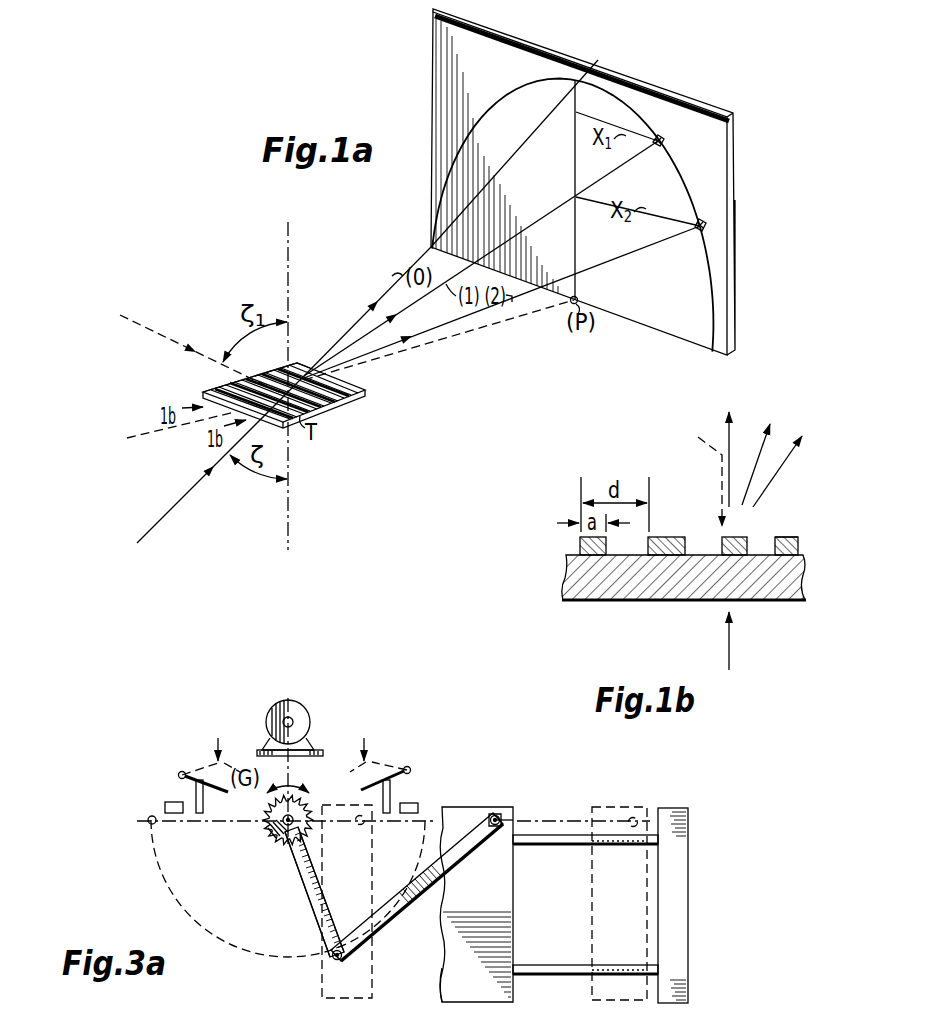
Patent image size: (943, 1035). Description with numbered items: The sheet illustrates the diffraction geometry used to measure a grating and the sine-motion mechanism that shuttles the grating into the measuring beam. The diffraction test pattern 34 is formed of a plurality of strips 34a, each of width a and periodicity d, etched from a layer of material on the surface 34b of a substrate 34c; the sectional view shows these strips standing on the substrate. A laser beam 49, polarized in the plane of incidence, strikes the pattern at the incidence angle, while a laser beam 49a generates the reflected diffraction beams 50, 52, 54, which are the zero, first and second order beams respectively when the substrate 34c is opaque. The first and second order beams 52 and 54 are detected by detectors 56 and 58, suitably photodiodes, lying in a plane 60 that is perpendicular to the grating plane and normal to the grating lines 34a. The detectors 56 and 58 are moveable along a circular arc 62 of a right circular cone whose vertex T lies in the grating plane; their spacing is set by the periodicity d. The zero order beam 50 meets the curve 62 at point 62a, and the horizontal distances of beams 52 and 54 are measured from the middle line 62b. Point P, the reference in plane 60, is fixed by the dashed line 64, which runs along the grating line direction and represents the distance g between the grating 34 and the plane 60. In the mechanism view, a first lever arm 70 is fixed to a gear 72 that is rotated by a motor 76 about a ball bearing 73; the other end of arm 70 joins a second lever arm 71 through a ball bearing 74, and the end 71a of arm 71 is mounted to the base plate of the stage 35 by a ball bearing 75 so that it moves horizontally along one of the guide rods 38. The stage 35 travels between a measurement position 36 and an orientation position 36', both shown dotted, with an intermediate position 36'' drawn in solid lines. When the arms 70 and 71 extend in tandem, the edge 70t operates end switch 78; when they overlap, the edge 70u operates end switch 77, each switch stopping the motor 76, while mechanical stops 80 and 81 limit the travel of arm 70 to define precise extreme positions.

In FIG. 1A, the diffraction test pattern 34 is at (330, 396).
In FIG. 1B, the diffraction test pattern 34 is at (562, 574).
In FIG. 1A, the strips 34a is at (232, 384).
In FIG. 1B, the strips 34a is at (580, 547).
In FIG. 1B, the surface 34b is at (768, 537).
In FIG. 1B, the substrate 34c is at (598, 604).
In FIG. 3A, the stage 35 is at (474, 953).
In FIG. 3A, the measurement position 36 is at (367, 918).
In FIG. 3A, the orientation position 36' is at (600, 907).
In FIG. 3A, the intermediate position 36'' is at (411, 985).
In FIG. 3A, the guide rods 38 is at (574, 834).
In FIG. 1A, the laser beam 49 is at (198, 474).
In FIG. 1B, the laser beam 49 is at (730, 645).
In FIG. 1A, the laser beam 49a is at (162, 336).
In FIG. 1B, the laser beam 49a is at (694, 472).
In FIG. 1A, the zero order diffraction beam 50 is at (366, 312).
In FIG. 1B, the zero order diffraction beam 50 is at (728, 426).
In FIG. 1A, the first order diffraction beam 52 is at (420, 312).
In FIG. 1B, the first order diffraction beam 52 is at (770, 420).
In FIG. 1A, the second order diffraction beam 54 is at (422, 340).
In FIG. 1B, the second order diffraction beam 54 is at (798, 438).
In FIG. 1A, the detector 56 is at (662, 136).
In FIG. 1A, the detector 58 is at (706, 223).
In FIG. 1A, the plane 60 is at (736, 296).
In FIG. 1A, the circular arc 62 is at (546, 77).
In FIG. 1A, the point 62a is at (584, 76).
In FIG. 1A, the middle line 62b is at (575, 160).
In FIG. 1A, the line g 64 is at (502, 332).
In FIG. 3A, the first lever arm 70 is at (304, 886).
In FIG. 3A, the edge 70t is at (338, 904).
In FIG. 3A, the edge 70u is at (320, 908).
In FIG. 3A, the second lever arm 71 is at (456, 866).
In FIG. 3A, the end 71a is at (508, 820).
In FIG. 3A, the gear 72 is at (266, 810).
In FIG. 3A, the ball bearing 73 is at (268, 830).
In FIG. 3A, the ball bearing 74 is at (338, 961).
In FIG. 3A, the ball bearing 75 is at (494, 814).
In FIG. 3A, the motor 76 is at (310, 716).
In FIG. 3A, the end switch 77 is at (200, 728).
In FIG. 3A, the end switch 78 is at (420, 760).
In FIG. 3A, the mechanical stop 80 is at (172, 798).
In FIG. 3A, the mechanical stop 81 is at (418, 800).